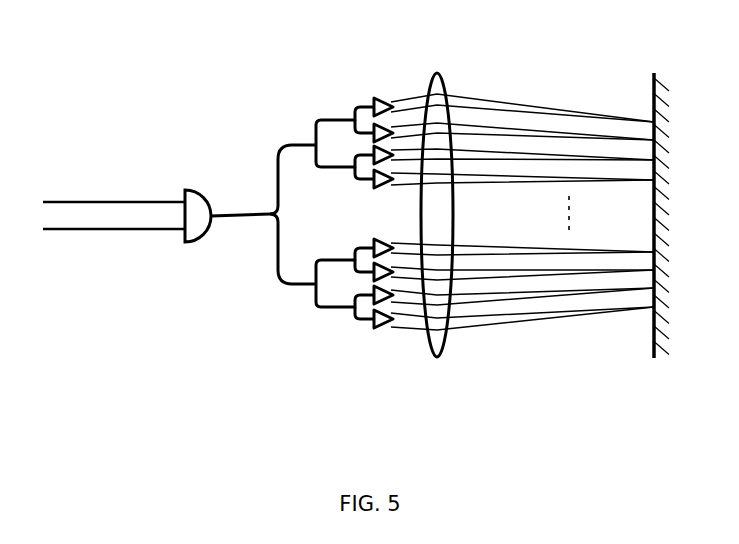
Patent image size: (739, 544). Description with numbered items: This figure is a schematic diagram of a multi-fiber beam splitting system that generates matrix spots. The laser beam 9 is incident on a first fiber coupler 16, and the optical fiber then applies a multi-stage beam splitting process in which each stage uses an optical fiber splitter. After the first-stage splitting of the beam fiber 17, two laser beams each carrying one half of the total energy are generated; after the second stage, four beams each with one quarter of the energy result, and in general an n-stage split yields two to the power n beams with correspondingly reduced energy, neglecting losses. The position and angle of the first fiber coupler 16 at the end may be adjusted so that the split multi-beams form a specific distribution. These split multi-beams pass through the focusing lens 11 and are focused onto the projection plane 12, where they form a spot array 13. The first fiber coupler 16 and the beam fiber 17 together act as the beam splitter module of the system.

The laser beam 9 is at (62, 201).
The first fiber coupler 16 is at (185, 247).
The beam fiber 17 is at (268, 209).
The spot array 13 is at (645, 297).
The focusing lens 11 is at (433, 67).
The projection plane 12 is at (657, 72).